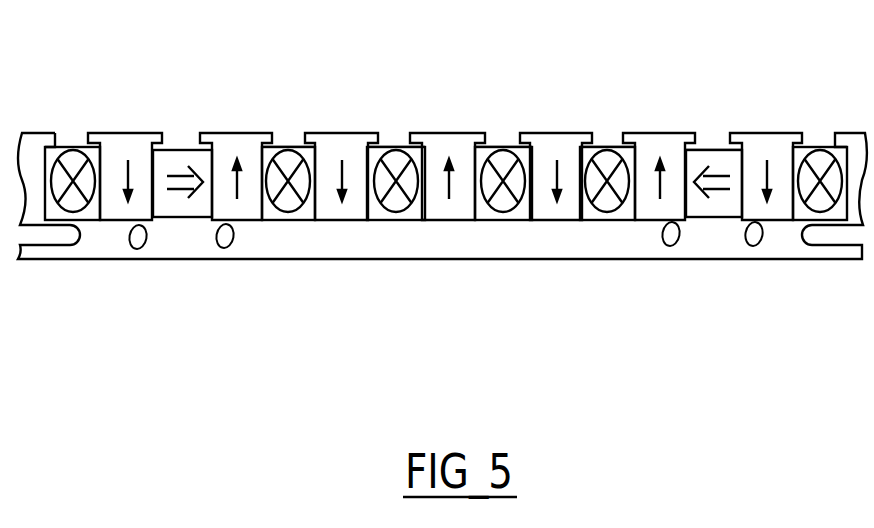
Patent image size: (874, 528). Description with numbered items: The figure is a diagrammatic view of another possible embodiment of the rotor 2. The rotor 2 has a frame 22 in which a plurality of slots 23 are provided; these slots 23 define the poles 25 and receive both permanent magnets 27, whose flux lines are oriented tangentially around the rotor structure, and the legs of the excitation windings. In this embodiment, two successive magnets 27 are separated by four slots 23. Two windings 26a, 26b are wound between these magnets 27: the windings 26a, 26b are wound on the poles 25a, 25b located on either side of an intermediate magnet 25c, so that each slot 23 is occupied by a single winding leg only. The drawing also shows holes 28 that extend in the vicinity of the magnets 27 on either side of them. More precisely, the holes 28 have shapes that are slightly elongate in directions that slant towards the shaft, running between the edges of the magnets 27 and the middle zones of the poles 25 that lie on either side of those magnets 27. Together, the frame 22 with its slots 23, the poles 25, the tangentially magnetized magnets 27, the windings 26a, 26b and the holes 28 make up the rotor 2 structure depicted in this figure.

The rotor 2 is at (442, 186).
The frame 22 is at (33, 262).
The slots 23 is at (283, 126).
The poles 25 is at (220, 136).
The pole 25a is at (322, 136).
The pole 25b is at (573, 136).
The intermediate magnet 25c is at (472, 136).
The winding 26a is at (393, 205).
The winding 26b is at (607, 198).
The permanent magnets 27 is at (192, 213).
The holes 28 is at (133, 247).